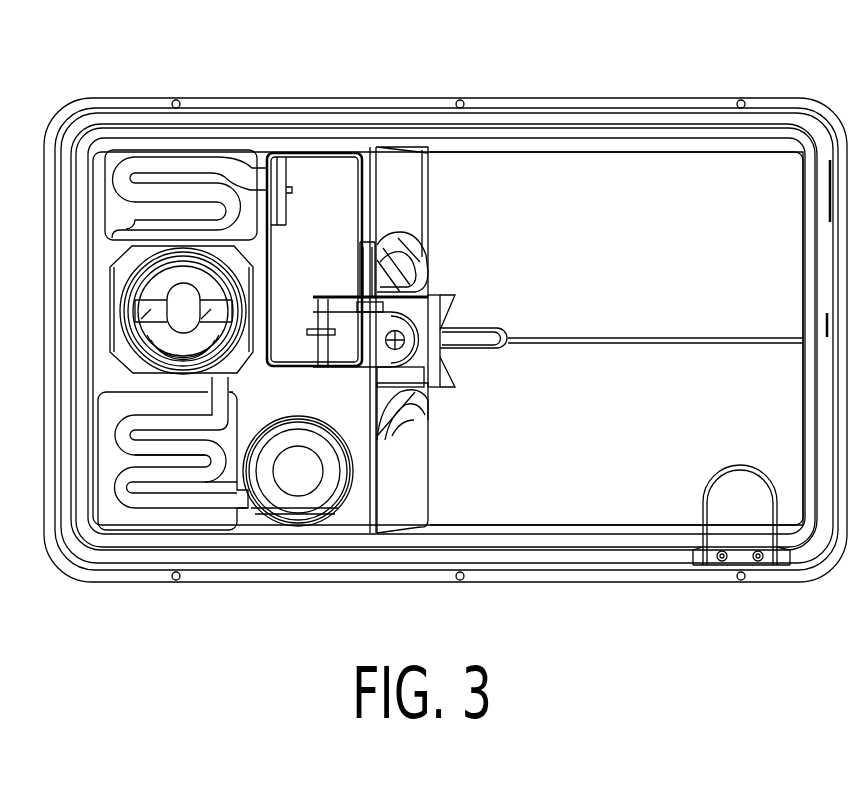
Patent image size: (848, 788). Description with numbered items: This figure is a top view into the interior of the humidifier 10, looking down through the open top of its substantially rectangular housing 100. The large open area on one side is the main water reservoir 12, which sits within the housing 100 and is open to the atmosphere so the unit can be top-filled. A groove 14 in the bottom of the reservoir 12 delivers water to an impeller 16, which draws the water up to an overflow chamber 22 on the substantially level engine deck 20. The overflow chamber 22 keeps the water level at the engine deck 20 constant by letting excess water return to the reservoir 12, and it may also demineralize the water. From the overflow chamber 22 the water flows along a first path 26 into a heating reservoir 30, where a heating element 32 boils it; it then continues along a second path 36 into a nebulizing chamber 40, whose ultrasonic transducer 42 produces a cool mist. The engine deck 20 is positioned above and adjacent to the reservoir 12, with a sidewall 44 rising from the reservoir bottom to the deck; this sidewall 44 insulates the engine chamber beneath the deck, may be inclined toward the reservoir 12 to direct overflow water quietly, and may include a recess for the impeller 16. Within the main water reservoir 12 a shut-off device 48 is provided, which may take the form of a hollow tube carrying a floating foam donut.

The humidifier 10 is at (720, 53).
The housing 100 is at (498, 118).
The main water reservoir 12 is at (625, 245).
The groove 14 is at (480, 340).
The impeller 16 is at (424, 320).
The engine deck 20 is at (317, 412).
The overflow chamber 22 is at (327, 258).
The first path 26 is at (190, 165).
The heating reservoir 30 is at (134, 306).
The heating element 32 is at (200, 285).
The second path 36 is at (163, 500).
The nebulizing chamber 40 is at (306, 460).
The ultrasonic transducer 42 is at (318, 485).
The sidewall 44 is at (397, 486).
The shut-off device 48 is at (750, 515).